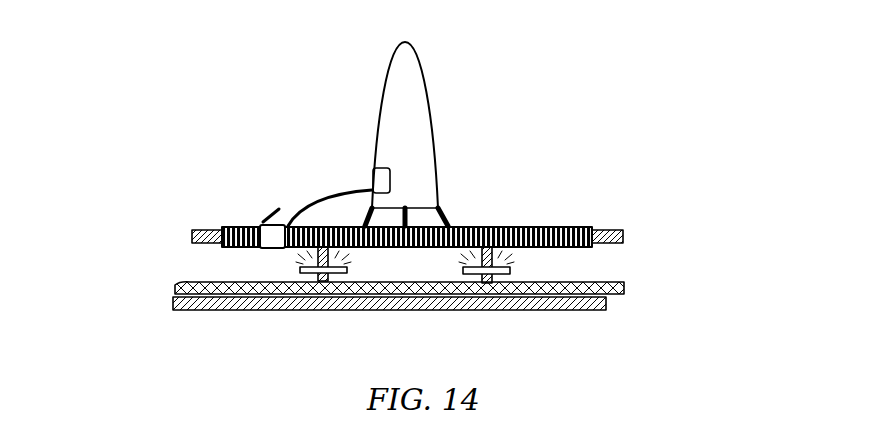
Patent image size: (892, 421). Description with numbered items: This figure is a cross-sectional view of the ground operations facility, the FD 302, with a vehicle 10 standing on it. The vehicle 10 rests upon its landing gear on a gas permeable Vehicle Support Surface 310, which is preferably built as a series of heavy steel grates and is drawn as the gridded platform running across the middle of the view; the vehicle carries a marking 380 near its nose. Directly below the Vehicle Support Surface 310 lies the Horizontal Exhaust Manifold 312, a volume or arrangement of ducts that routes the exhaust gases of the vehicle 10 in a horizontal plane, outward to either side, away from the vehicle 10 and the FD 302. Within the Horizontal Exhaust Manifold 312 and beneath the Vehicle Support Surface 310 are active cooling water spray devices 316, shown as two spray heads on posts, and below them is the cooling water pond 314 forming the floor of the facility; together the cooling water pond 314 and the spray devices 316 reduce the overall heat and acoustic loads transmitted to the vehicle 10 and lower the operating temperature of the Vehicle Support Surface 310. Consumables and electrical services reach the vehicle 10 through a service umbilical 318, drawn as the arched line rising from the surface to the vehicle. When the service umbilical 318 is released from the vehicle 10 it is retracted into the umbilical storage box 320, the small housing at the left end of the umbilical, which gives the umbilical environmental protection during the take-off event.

The vehicle 10 is at (361, 120).
The fin marking 380 is at (405, 66).
The FD 302 is at (229, 186).
The Vehicle Support Surface 310 is at (523, 226).
The Horizontal Exhaust Manifold 312 is at (189, 262).
The cooling water pond 314 is at (176, 284).
The active cooling water spray devices 316 is at (343, 266).
The service umbilical 318 is at (350, 192).
The umbilical storage box 320 is at (268, 249).